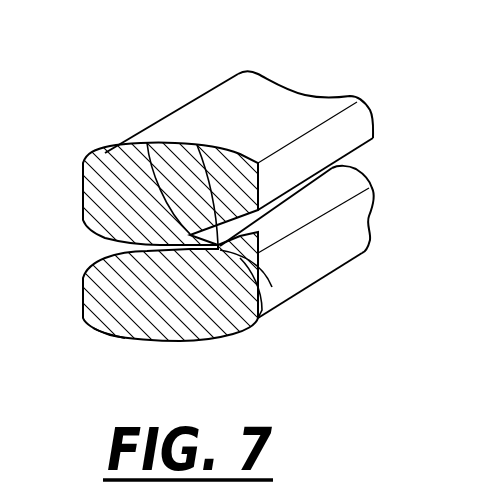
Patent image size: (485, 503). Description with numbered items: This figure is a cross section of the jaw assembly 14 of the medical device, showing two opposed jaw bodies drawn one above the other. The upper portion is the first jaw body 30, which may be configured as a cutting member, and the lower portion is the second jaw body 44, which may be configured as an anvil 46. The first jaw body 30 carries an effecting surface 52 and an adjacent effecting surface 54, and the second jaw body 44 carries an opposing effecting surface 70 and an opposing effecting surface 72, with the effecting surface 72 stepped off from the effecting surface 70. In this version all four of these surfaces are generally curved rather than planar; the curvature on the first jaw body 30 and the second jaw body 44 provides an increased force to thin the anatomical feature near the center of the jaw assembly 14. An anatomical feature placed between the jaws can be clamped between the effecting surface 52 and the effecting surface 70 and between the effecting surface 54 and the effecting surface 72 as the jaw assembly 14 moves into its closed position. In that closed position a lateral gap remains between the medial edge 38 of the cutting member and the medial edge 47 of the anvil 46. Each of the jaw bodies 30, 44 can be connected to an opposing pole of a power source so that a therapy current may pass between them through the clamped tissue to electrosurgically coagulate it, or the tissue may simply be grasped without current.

The jaw assembly 14 is at (122, 68).
The first jaw body 30 is at (133, 143).
The medial edge 38 is at (147, 143).
The second jaw body 44 is at (233, 334).
The anvil 46 is at (297, 242).
The medial edge 47 is at (263, 308).
The effecting surface 52 is at (106, 153).
The effecting surface 54 is at (197, 145).
The effecting surface 70 is at (111, 333).
The effecting surface 72 is at (272, 287).